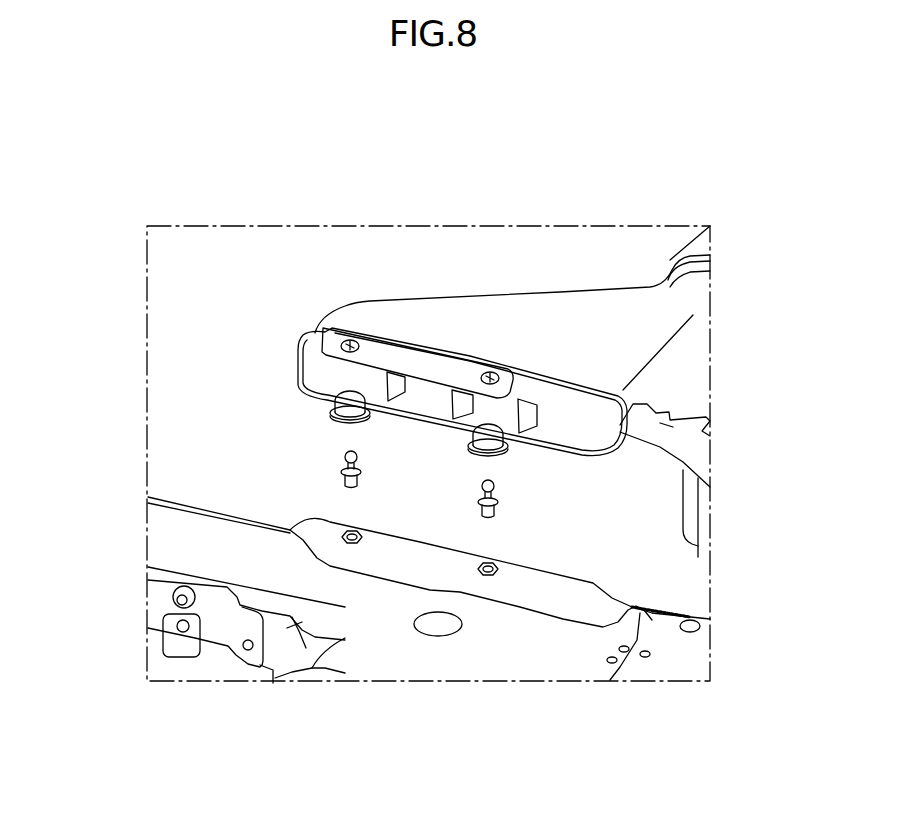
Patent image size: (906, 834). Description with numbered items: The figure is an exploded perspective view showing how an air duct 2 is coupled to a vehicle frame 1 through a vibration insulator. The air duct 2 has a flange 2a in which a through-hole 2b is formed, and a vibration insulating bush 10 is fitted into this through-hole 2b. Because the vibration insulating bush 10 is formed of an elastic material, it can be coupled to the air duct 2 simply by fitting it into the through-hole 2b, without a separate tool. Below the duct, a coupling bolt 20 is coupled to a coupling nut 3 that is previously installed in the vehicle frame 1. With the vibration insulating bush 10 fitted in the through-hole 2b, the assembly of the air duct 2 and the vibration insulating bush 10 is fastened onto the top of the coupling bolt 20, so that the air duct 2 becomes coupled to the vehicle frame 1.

The vehicle frame 1 is at (527, 585).
The air duct 2 is at (530, 318).
The flange 2a is at (420, 365).
The through-hole 2b is at (347, 345).
The coupling nut 3 is at (348, 543).
The vibration insulating bush 10 is at (352, 403).
The coupling bolt 20 is at (340, 472).